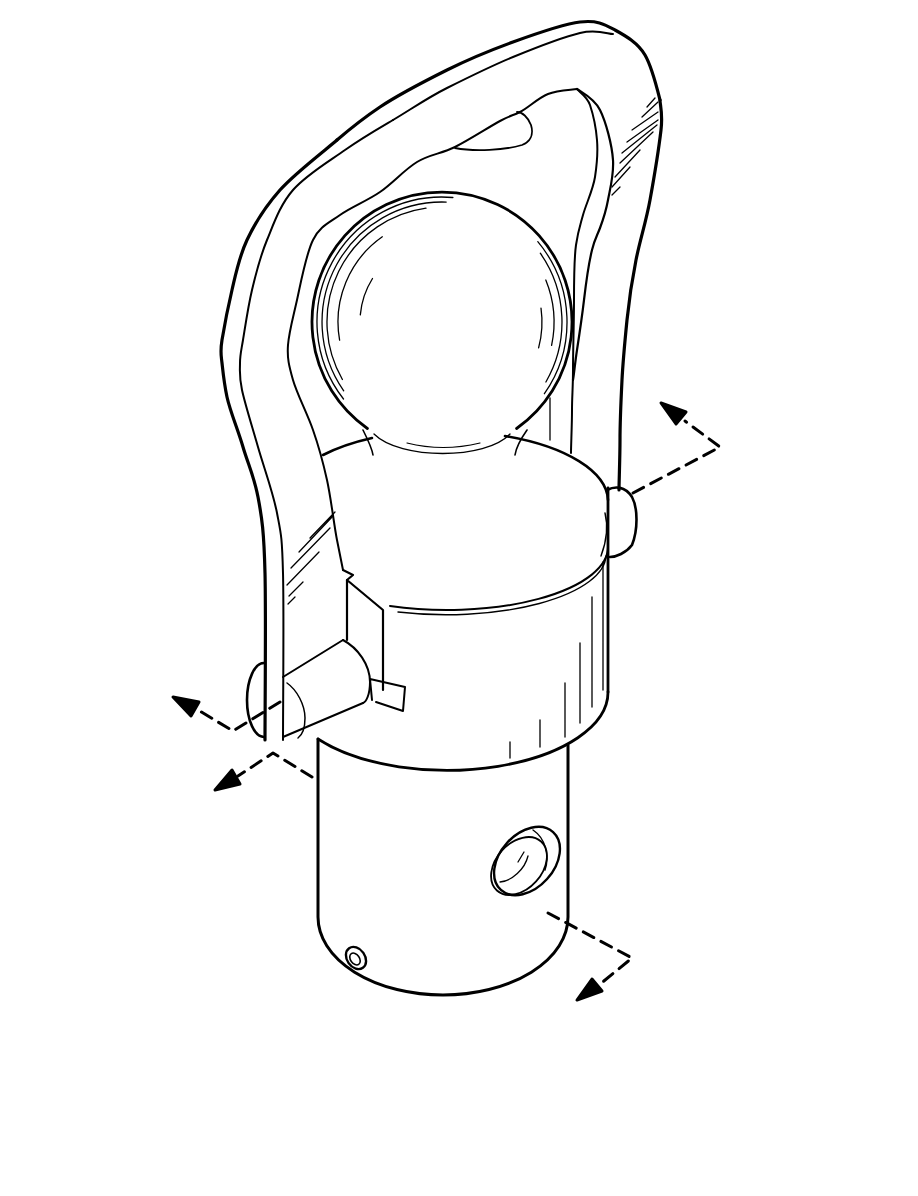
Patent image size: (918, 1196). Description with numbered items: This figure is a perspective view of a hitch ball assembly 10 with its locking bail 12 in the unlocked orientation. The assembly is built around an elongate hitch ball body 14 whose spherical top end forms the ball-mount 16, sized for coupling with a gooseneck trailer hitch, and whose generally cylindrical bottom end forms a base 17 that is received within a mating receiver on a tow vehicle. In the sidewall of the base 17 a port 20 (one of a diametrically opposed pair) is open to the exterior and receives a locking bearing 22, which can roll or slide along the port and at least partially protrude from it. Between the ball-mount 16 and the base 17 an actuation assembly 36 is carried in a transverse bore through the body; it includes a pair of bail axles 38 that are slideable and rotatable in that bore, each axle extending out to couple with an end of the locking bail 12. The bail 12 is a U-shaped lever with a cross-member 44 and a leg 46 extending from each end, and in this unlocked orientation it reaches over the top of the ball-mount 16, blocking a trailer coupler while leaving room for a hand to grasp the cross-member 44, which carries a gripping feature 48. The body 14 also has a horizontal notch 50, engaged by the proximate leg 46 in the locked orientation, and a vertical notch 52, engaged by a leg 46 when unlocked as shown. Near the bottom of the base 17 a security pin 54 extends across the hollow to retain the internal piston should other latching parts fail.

The hitch ball assembly 10 is at (100, 143).
The locking bail 12 is at (662, 127).
The hitch ball body 14 is at (610, 657).
The ball-mount 16 is at (490, 263).
The base 17 is at (318, 878).
The port 20 is at (523, 830).
The locking bearing 22 is at (530, 867).
The actuation assembly 36 is at (212, 658).
The bail axle 38 is at (637, 537).
The cross-member 44 is at (375, 110).
The leg 46 is at (624, 360).
The gripping feature 48 is at (533, 148).
The horizontal notch 50 is at (390, 695).
The vertical notch 52 is at (343, 571).
The security pin 54 is at (350, 966).